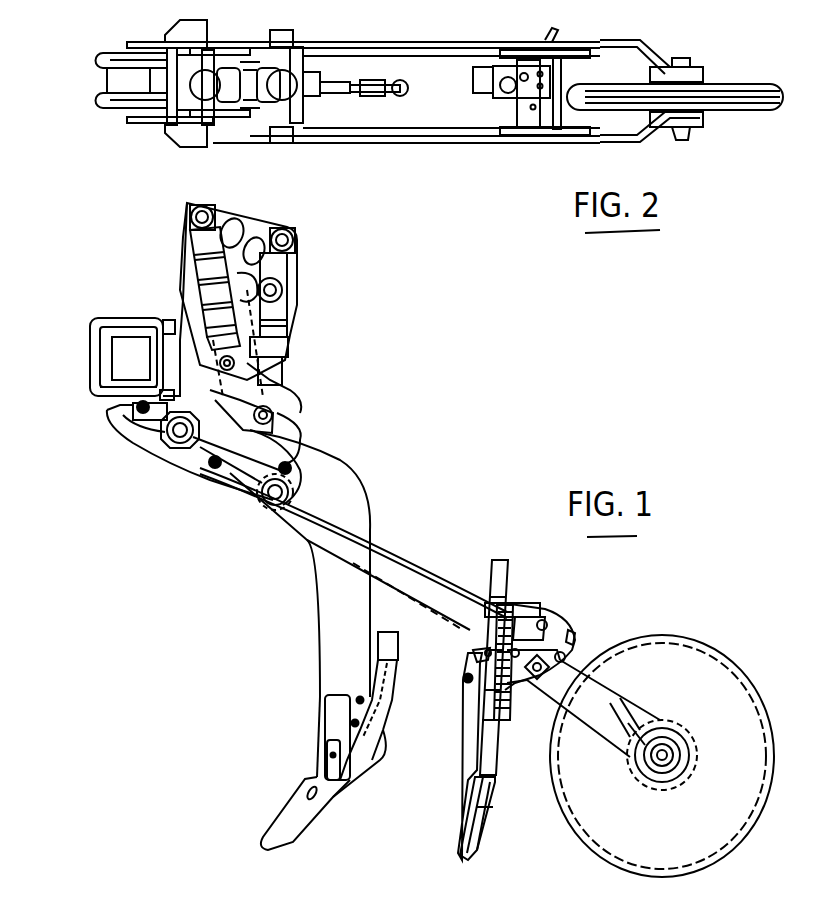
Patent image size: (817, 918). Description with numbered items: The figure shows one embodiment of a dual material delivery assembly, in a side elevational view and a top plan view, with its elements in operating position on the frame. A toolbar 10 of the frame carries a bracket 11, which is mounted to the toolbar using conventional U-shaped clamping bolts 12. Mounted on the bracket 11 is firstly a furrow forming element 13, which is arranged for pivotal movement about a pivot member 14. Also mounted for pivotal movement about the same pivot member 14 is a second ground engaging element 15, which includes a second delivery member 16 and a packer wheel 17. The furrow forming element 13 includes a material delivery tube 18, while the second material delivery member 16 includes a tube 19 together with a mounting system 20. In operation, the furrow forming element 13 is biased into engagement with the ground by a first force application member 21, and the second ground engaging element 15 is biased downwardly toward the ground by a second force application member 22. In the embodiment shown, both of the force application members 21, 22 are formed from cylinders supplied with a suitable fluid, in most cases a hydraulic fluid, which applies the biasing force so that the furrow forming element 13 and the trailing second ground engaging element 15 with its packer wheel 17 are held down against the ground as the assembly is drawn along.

The toolbar 10 is at (110, 363).
The bracket 11 is at (185, 290).
The U-shaped clamping bolts 12 is at (117, 306).
The furrow forming element 13 is at (352, 490).
The pivot member 14 is at (180, 442).
The second ground engaging element 15 is at (475, 537).
The second delivery member 16 is at (463, 768).
The packer wheel 17 is at (693, 667).
The material delivery tube 18 is at (380, 763).
The tube 19 is at (503, 767).
The mounting system 20 is at (523, 593).
The first force application member 21 is at (290, 300).
The second force application member 22 is at (245, 290).